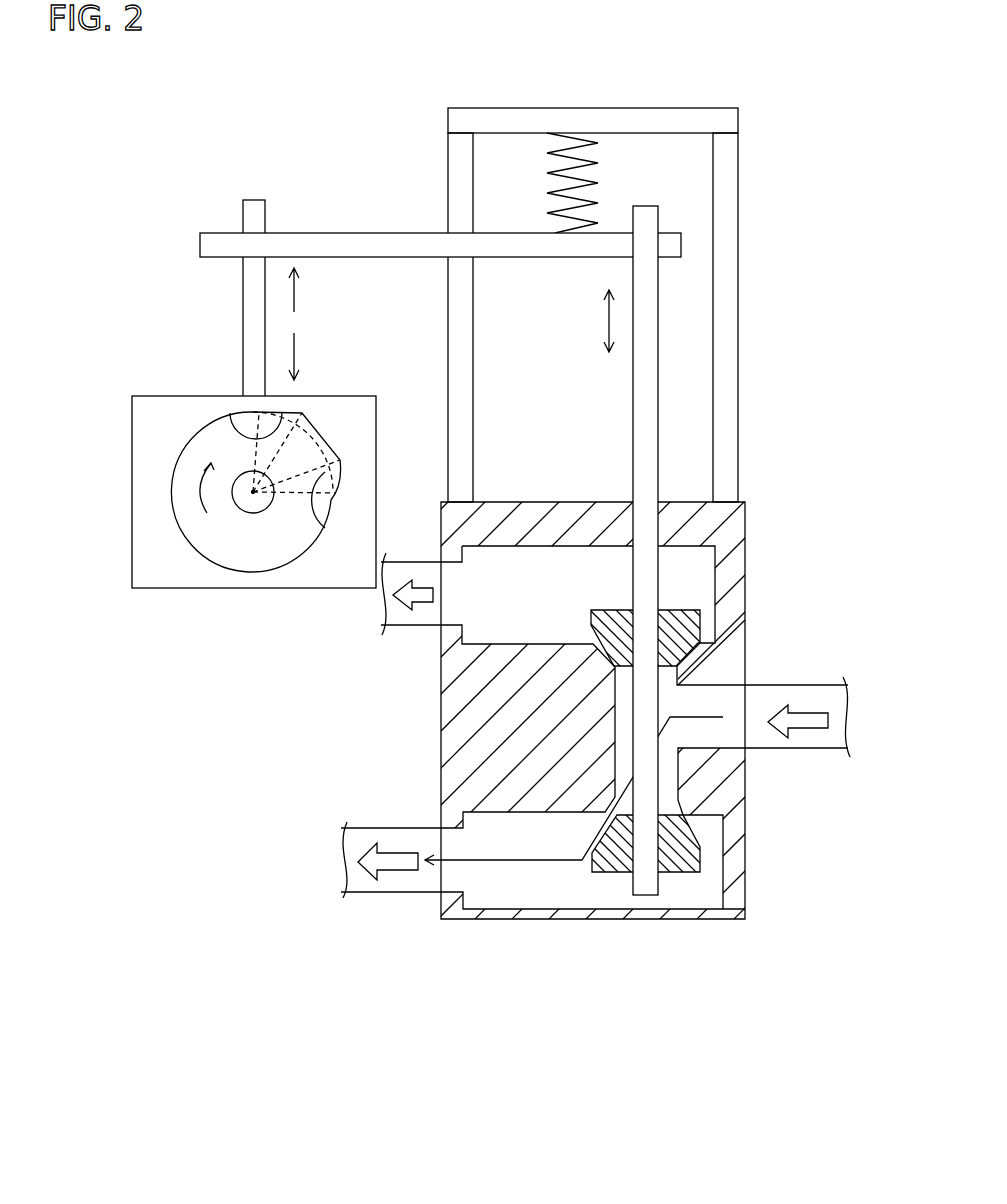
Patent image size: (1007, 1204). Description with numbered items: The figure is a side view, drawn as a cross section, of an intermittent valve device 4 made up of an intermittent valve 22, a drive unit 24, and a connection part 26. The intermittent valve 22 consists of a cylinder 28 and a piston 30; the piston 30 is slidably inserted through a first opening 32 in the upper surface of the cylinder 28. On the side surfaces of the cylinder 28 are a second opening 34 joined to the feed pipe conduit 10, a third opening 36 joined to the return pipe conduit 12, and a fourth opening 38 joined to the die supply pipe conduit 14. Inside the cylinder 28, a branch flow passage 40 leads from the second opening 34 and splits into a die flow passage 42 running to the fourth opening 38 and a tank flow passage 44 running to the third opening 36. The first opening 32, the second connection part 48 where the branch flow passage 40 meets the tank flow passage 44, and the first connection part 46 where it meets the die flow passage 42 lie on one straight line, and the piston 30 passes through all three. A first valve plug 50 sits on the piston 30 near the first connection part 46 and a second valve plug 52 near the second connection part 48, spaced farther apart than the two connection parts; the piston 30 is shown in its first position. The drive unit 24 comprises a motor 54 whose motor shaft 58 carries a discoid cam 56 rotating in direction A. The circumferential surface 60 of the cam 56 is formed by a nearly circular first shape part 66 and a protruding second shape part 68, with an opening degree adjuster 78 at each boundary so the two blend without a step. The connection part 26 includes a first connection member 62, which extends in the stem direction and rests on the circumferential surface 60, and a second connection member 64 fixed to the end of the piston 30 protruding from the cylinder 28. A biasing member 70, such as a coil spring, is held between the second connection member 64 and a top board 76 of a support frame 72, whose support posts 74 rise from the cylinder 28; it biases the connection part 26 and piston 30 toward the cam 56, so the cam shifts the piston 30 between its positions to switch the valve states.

The intermittent valve device 4 is at (412, 1068).
The feed pipe conduit 10 is at (820, 750).
The return pipe conduit 12 is at (425, 562).
The die supply pipe conduit 14 is at (370, 893).
The intermittent valve 22 is at (518, 627).
The drive unit 24 is at (384, 391).
The connection part 26 is at (429, 258).
The cylinder 28 is at (747, 898).
The piston 30 is at (659, 328).
The first opening 32 is at (660, 522).
The second opening 34 is at (745, 748).
The third opening 36 is at (452, 566).
The fourth opening 38 is at (453, 892).
The branch flow passage 40 is at (698, 700).
The die flow passage 42 is at (520, 890).
The tank flow passage 44 is at (517, 597).
The first connection part 46 is at (703, 790).
The second connection part 48 is at (600, 653).
The first valve plug 50 is at (683, 875).
The second valve plug 52 is at (600, 608).
The motor 54 is at (150, 590).
The cam 56 is at (280, 553).
The motor shaft 58 is at (250, 513).
The circumferential surface 60 is at (367, 402).
The first connection member 62 is at (242, 220).
The second connection member 64 is at (360, 232).
The first shape part 66 is at (335, 518).
The second shape part 68 is at (327, 427).
The biasing member 70 is at (598, 162).
The support frame 72 is at (612, 275).
The support post 74 is at (448, 195).
The top board 76 is at (540, 108).
The opening degree adjuster 78 is at (232, 427).